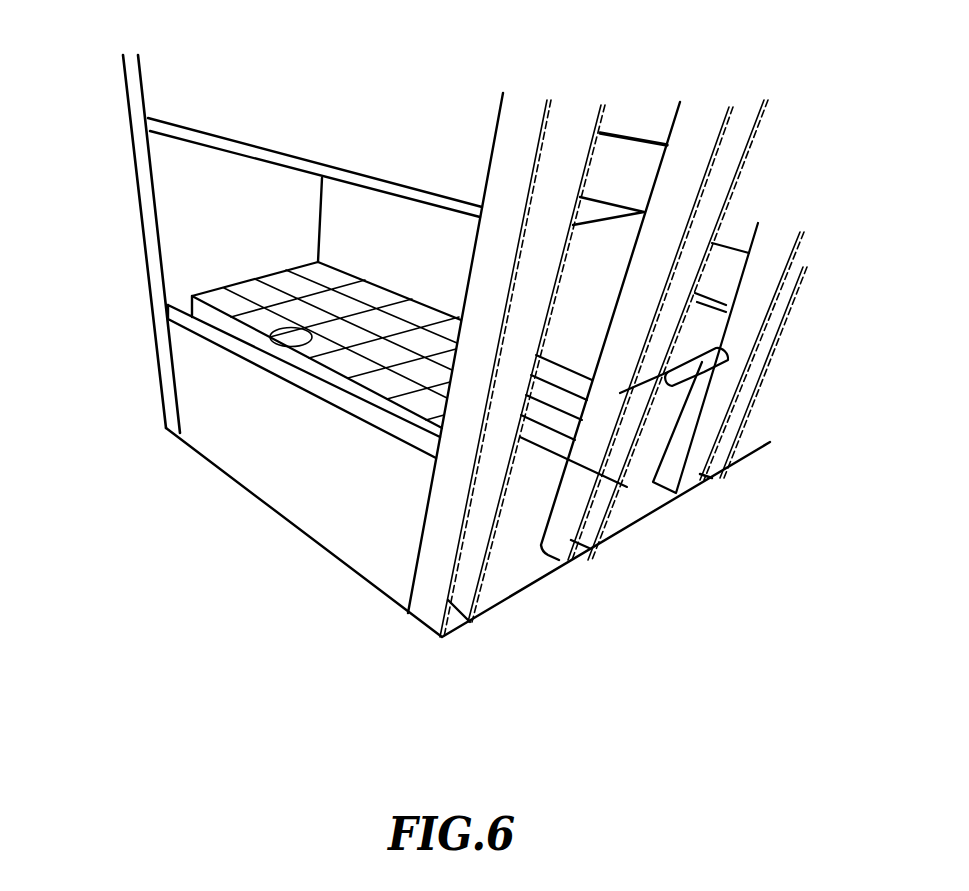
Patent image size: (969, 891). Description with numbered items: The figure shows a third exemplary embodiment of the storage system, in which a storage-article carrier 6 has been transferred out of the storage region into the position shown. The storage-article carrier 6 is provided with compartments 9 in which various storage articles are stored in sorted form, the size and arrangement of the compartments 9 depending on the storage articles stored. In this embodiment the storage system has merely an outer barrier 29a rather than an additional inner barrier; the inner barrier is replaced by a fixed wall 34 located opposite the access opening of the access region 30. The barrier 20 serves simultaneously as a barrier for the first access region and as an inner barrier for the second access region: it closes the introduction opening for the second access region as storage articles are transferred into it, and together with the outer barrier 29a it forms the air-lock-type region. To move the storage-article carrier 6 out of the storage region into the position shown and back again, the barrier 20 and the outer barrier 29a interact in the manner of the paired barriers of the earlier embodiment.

The outer barrier 29a is at (150, 85).
The fixed wall 34 is at (342, 212).
The storage-article carrier 6 is at (327, 377).
The compartments 9 is at (403, 393).
The barrier 20 is at (612, 489).
The access region 30 is at (592, 406).